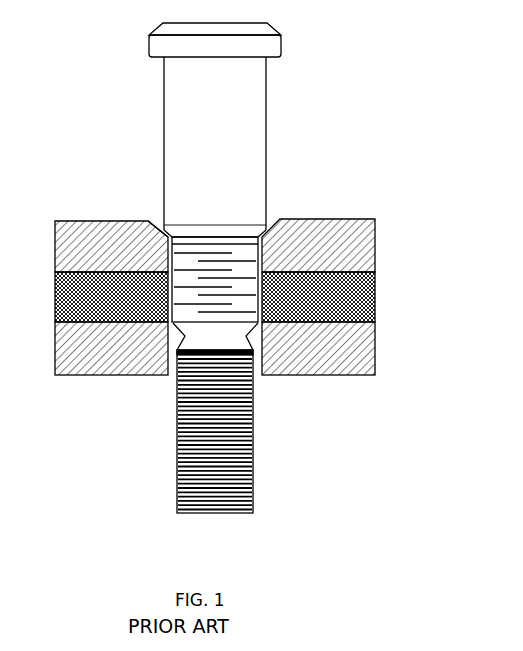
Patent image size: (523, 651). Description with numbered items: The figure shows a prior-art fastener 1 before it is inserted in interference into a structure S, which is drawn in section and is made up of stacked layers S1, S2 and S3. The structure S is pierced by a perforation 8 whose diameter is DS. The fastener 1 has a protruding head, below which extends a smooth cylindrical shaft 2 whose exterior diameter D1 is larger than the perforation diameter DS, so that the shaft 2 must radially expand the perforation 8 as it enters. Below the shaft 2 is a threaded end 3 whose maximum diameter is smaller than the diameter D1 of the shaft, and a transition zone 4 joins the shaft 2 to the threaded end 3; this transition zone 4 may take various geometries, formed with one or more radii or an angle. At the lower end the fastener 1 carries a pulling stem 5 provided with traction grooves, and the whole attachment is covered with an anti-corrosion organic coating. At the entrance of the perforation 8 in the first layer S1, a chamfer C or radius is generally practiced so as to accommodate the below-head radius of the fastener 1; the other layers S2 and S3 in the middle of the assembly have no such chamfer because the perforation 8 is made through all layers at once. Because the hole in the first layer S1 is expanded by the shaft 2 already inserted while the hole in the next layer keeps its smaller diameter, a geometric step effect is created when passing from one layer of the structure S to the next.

The fastener 1 is at (316, 74).
The smooth cylindrical shaft 2 is at (163, 88).
The threaded end 3 is at (253, 252).
The transition zone 4 is at (200, 230).
The pulling stem 5 is at (248, 440).
The perforation 8 is at (172, 360).
The chamfer C is at (158, 228).
The exterior diameter of the smooth cylindrical shaft D1 is at (130, 118).
The perforation diameter DS is at (298, 248).
The structure S is at (433, 143).
The first layer S1 is at (356, 220).
The second layer S2 is at (375, 283).
The third layer S3 is at (375, 347).